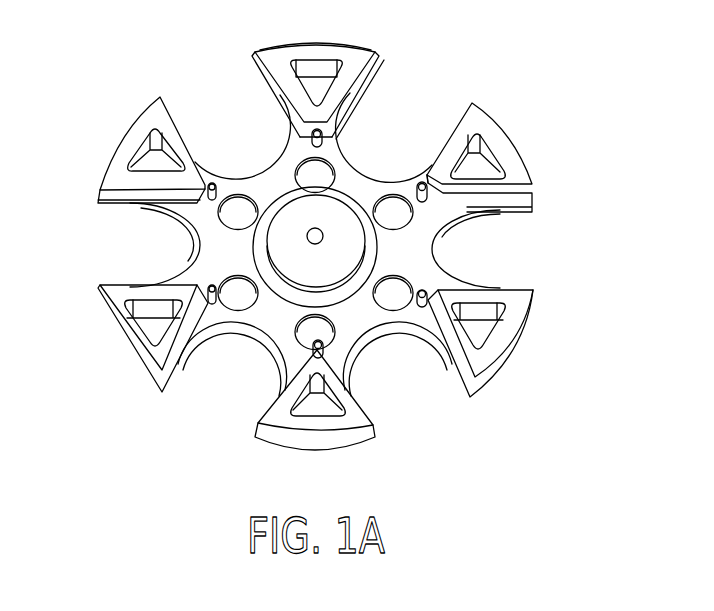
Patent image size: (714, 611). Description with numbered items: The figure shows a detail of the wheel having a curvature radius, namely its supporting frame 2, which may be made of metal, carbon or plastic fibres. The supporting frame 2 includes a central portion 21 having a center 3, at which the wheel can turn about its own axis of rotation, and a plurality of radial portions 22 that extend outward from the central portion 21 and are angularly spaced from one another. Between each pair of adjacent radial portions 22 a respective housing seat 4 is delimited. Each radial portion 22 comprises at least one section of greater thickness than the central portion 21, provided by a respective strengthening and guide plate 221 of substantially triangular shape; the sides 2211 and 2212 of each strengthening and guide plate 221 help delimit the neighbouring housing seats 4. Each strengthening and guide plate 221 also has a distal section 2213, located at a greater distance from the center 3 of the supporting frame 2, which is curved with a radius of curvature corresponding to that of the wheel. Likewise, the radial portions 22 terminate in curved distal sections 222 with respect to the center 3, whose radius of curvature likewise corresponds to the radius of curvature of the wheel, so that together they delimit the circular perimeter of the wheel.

The supporting frame 2 is at (363, 244).
The central portion 21 is at (315, 270).
The radial portions 22 is at (315, 244).
The strengthening and guide plate 221 is at (341, 90).
The distal sections 222 is at (255, 66).
The side 2211 is at (362, 100).
The side 2212 is at (256, 66).
The distal section 2213 is at (338, 50).
The center 3 is at (315, 239).
The housing seat 4 is at (542, 263).